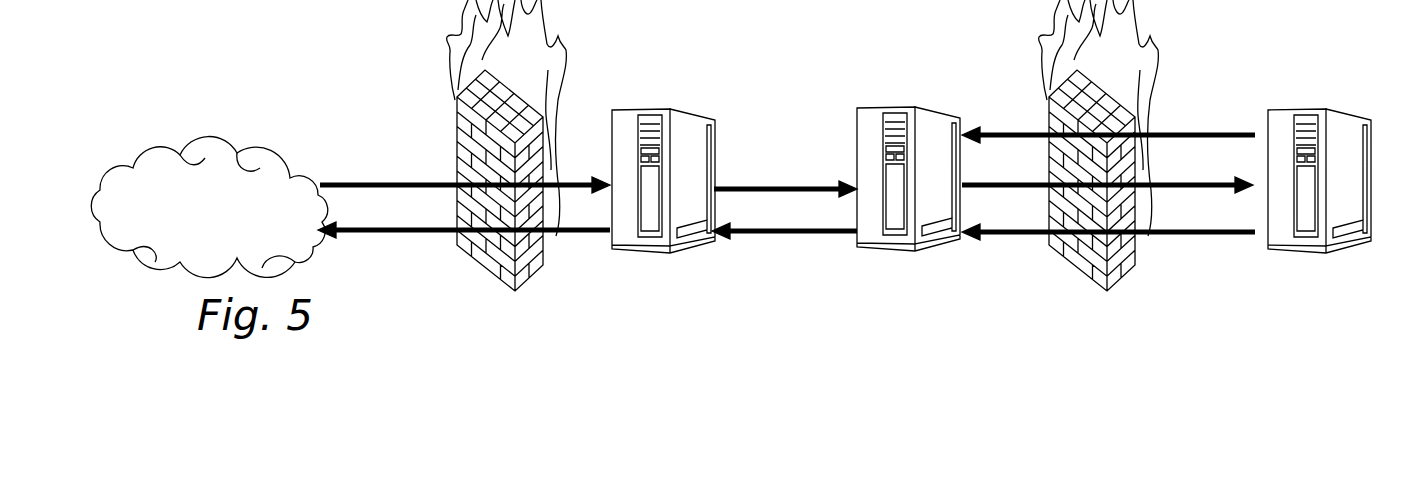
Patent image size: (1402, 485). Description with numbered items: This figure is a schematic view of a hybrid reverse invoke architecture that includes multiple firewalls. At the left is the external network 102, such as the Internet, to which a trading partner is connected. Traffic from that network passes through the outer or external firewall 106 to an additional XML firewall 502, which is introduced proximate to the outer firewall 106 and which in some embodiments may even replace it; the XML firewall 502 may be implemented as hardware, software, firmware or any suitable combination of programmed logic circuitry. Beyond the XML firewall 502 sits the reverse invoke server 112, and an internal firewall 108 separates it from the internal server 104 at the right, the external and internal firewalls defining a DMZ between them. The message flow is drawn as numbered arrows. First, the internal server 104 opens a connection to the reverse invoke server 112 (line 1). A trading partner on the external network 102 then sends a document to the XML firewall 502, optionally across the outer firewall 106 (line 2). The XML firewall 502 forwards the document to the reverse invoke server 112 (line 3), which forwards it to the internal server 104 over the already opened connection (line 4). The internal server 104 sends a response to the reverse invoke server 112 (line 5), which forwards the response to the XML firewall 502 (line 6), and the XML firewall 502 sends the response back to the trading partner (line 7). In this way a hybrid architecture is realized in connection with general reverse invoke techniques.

The external network 102 is at (226, 140).
The external firewall 106 is at (457, 107).
The XML firewall 502 is at (668, 109).
The reverse invoke server 112 is at (911, 108).
The internal firewall 108 is at (1126, 276).
The internal server 104 is at (1323, 109).
The line 1 is at (1108, 123).
The line 2 is at (465, 177).
The line 3 is at (785, 180).
The line 4 is at (1107, 173).
The line 5 is at (1108, 222).
The line 6 is at (784, 224).
The line 7 is at (464, 219).